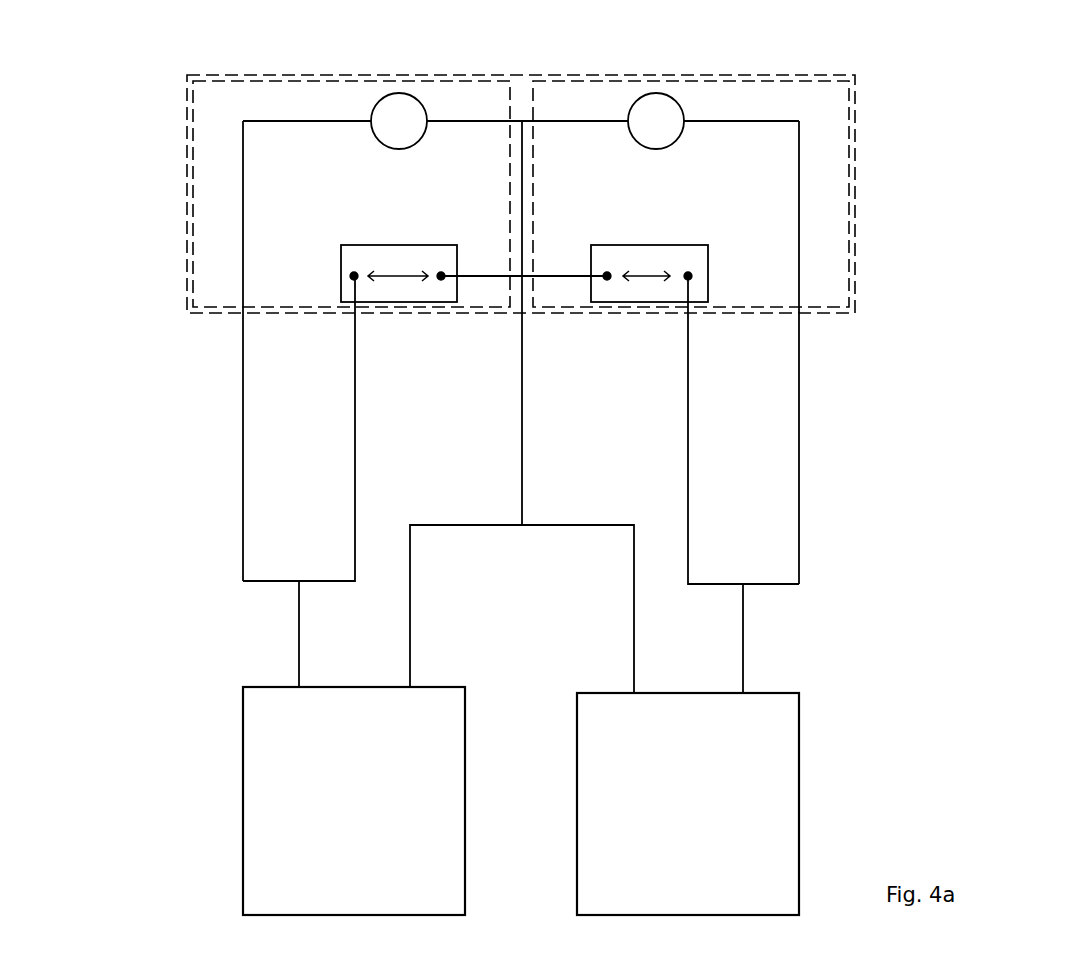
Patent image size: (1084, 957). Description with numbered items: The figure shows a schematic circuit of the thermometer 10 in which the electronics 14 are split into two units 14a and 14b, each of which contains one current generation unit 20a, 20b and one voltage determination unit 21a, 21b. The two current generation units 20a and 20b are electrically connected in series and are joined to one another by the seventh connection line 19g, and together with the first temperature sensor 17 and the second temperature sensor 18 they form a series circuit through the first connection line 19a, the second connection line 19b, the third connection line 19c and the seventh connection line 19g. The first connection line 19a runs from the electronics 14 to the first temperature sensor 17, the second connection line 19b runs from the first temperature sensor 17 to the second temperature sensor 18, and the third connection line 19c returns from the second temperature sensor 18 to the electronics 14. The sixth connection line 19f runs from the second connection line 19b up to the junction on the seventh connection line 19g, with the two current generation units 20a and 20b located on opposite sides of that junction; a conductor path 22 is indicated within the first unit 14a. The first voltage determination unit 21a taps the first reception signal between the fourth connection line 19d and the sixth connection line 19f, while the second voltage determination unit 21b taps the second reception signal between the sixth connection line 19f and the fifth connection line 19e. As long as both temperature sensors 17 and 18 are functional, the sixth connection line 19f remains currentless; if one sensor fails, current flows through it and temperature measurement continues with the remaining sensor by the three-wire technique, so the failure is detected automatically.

The measuring arrangement 10 is at (55, 25).
The electronics 14 is at (187, 221).
The first electronics unit 14a is at (241, 103).
The second electronics unit 14b is at (822, 93).
The first temperature sensor 17 is at (354, 801).
The second temperature sensor 18 is at (688, 804).
The first connection line 19a is at (219, 351).
The second connection line 19b is at (522, 609).
The third connection line 19c is at (825, 352).
The fourth connection line 19d is at (299, 481).
The fifth connection line 19e is at (743, 484).
The sixth connection line 19f is at (546, 323).
The seventh connection line 19g is at (521, 108).
The first current generation unit 20a is at (397, 98).
The second current generation unit 20b is at (655, 98).
The first voltage determination unit 21a is at (340, 277).
The second voltage determination unit 21b is at (591, 261).
The conductor path 22 is at (407, 191).